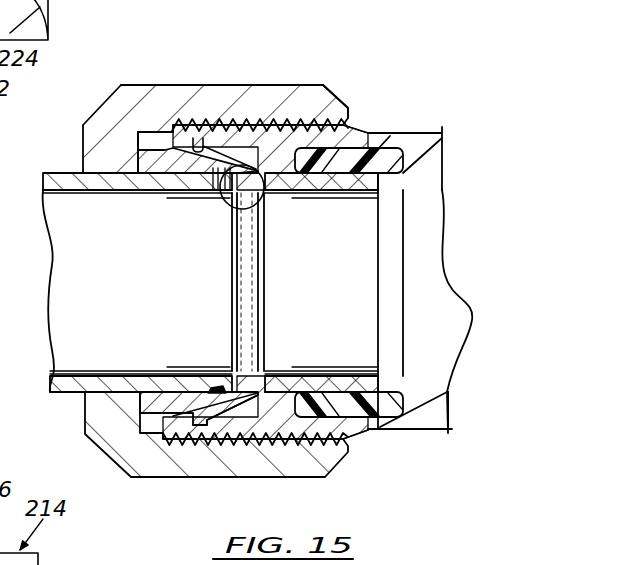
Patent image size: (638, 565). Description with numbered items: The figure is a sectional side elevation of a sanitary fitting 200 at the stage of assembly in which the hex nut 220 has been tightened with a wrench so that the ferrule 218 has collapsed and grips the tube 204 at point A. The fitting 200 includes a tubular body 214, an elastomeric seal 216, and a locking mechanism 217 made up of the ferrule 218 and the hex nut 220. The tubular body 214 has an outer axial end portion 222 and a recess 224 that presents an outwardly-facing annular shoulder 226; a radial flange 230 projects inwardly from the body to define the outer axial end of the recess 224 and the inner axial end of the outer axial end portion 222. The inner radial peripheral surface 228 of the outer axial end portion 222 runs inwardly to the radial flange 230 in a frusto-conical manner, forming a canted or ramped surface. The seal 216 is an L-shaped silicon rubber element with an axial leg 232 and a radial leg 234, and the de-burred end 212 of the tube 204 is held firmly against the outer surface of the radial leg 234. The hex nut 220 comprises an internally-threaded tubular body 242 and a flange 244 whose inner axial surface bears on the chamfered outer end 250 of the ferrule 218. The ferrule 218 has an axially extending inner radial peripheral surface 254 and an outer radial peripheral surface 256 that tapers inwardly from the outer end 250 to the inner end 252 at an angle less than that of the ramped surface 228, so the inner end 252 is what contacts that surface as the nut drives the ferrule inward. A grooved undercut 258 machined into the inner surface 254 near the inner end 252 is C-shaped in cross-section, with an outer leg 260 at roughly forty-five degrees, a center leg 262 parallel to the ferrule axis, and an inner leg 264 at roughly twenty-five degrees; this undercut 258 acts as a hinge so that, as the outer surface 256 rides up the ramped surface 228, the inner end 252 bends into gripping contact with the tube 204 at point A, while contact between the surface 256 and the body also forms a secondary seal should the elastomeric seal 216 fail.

The fitting 200 is at (373, 50).
The tube 204 is at (52, 394).
The end of the tube 212 is at (400, 180).
The tubular body 214 is at (420, 133).
The elastomeric seal 216 is at (366, 131).
The locking mechanism 217 is at (308, 82).
The ferrule 218 is at (157, 418).
The hex nut 220 is at (297, 60).
The outer axial end portion 222 is at (283, 428).
The recess 224 is at (348, 414).
The annular shoulder 226 is at (400, 390).
The inner radial peripheral surface 228 is at (199, 146).
The radial flange 230 is at (280, 390).
The axial leg 232 is at (333, 388).
The radial leg 234 is at (378, 387).
The internally-threaded tubular body 242 is at (227, 85).
The flange 244 is at (138, 143).
The outer end 250 is at (135, 165).
The inner end 252 is at (366, 131).
The inner radial peripheral surface 254 is at (167, 376).
The outer radial peripheral surface 256 is at (173, 148).
The grooved undercut 258 is at (220, 392).
The outer leg 260 is at (213, 185).
The center leg 262 is at (220, 185).
The inner leg 264 is at (229, 178).
The point A is at (250, 206).